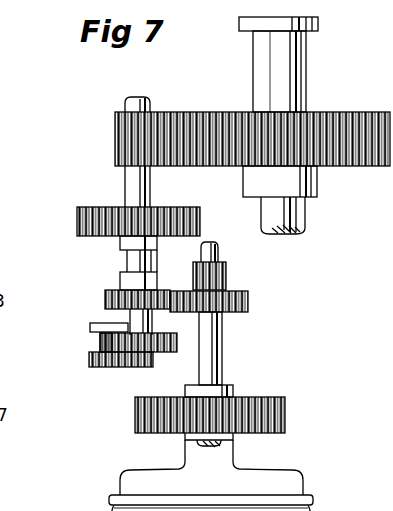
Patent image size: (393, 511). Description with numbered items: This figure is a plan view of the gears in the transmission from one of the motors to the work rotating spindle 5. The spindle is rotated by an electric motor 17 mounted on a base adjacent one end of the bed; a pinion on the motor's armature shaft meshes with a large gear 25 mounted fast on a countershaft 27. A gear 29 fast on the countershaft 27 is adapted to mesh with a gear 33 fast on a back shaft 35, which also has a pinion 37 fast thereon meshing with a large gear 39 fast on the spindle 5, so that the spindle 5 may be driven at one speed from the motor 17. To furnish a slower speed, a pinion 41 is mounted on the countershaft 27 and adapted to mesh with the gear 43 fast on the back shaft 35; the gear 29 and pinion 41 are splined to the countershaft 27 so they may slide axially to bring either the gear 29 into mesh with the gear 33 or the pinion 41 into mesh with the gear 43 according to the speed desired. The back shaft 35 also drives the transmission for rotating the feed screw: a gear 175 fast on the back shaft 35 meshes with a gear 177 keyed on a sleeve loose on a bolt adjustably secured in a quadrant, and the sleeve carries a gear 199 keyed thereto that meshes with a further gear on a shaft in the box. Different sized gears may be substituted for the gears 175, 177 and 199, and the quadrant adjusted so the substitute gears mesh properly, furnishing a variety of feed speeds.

The spindle 5 is at (306, 68).
The electric motor 17 is at (291, 484).
The large gear 25 is at (286, 409).
The countershaft 27 is at (222, 352).
The gear 29 is at (248, 301).
The gear 33 is at (105, 300).
The back shaft 35 is at (127, 263).
The pinion 37 is at (115, 138).
The large gear 39 is at (208, 120).
The pinion 41 is at (226, 272).
The gear 43 is at (200, 213).
The gear 175 is at (100, 342).
The gear 177 is at (100, 352).
The gear 199 is at (90, 365).